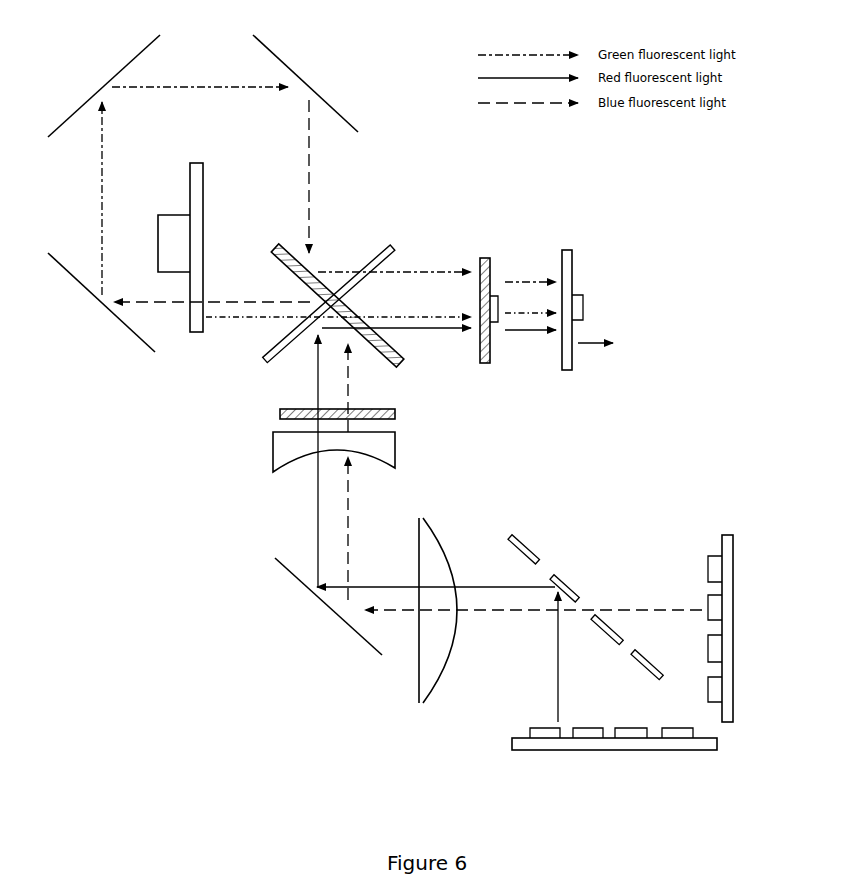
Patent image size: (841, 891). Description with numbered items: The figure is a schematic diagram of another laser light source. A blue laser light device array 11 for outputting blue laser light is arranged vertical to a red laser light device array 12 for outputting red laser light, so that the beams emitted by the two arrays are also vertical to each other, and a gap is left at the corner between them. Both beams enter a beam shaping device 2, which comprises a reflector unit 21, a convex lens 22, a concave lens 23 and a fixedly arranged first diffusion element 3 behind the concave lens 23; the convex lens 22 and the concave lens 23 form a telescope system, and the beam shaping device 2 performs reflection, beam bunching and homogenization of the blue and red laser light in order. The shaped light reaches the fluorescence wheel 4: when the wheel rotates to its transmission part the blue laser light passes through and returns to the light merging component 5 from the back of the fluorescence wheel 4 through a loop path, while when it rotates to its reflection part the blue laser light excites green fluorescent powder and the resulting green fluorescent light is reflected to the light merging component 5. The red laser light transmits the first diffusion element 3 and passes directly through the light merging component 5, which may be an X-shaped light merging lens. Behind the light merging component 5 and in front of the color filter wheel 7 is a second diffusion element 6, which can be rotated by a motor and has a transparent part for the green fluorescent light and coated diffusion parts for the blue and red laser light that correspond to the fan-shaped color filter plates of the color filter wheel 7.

The beam shaping device 2 is at (273, 498).
The first diffusion element 3 is at (385, 405).
The fluorescence wheel 4 is at (197, 335).
The light merging component 5 is at (350, 257).
The second diffusion element 6 is at (482, 250).
The color filter wheel 7 is at (577, 255).
The blue laser light device array 11 is at (720, 523).
The red laser light device array 12 is at (502, 752).
The reflector unit 21 is at (540, 550).
The convex lens 22 is at (437, 525).
The concave lens 23 is at (402, 455).